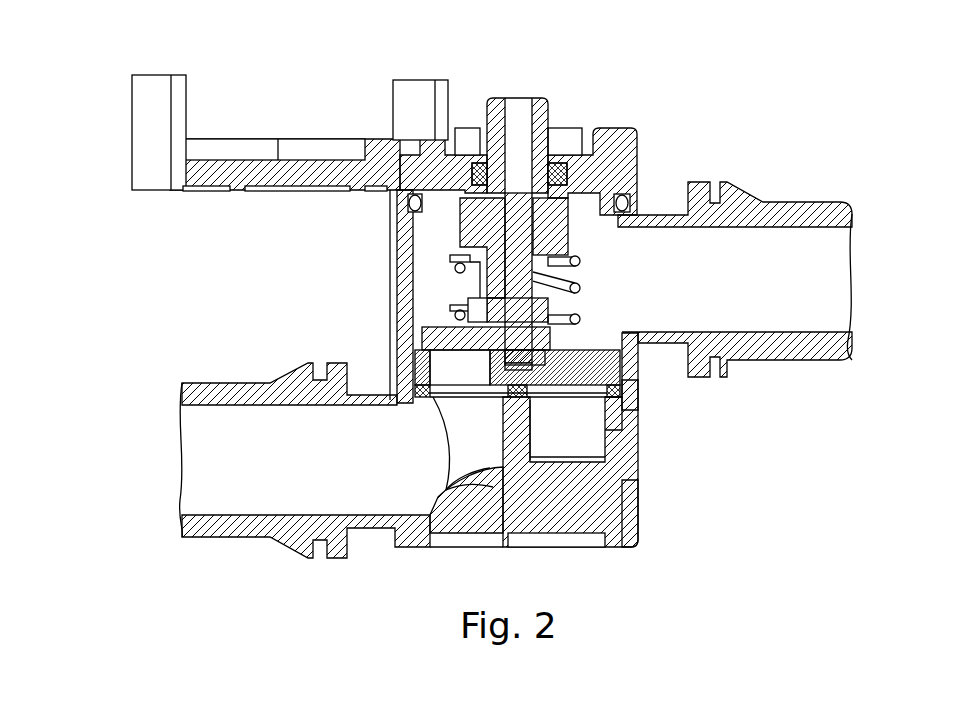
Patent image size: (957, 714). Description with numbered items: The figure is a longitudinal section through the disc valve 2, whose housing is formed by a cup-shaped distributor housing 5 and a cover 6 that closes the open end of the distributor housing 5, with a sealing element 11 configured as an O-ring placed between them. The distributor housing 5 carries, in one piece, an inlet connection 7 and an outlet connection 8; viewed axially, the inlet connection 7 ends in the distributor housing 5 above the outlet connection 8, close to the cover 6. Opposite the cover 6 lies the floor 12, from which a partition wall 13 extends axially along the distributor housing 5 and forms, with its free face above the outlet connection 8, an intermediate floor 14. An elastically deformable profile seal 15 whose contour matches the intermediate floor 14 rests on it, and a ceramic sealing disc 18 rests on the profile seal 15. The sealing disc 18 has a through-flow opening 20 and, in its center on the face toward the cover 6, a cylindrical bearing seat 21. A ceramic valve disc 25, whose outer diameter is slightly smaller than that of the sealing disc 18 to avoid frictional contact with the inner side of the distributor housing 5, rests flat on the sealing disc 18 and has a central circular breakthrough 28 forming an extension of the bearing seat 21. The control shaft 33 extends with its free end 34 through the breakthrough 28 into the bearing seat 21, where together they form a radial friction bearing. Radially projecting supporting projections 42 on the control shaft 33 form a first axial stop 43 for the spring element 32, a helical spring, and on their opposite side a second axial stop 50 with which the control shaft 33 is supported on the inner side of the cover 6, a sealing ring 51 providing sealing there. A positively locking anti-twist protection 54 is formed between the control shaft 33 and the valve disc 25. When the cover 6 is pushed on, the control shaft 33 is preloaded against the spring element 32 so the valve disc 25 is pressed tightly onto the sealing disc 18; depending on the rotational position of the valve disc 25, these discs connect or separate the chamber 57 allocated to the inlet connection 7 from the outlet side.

The disc valve 2 is at (861, 53).
The distributor housing 5 is at (636, 516).
The cover 6 is at (220, 148).
The inlet connection 7 is at (800, 201).
The outlet connection 8 is at (221, 530).
The sealing element 11 is at (632, 176).
The floor 12 is at (648, 541).
The partition wall 13 is at (545, 392).
The intermediate floor 14 is at (646, 393).
The profile seal 15 is at (616, 408).
The sealing disc 18 is at (409, 377).
The through-flow opening 20 is at (400, 374).
The bearing seat 21 is at (545, 398).
The valve disc 25 is at (432, 340).
The circular breakthrough 28 is at (562, 347).
The spring element 32 is at (585, 293).
The control shaft 33 is at (498, 235).
The free end 34 is at (548, 358).
The supporting projections 42 is at (470, 236).
The first axial stop 43 is at (457, 268).
The second axial stop 50 is at (379, 150).
The sealing ring 51 is at (555, 190).
The anti-twist protection 54 is at (456, 307).
The chamber 57 is at (445, 280).